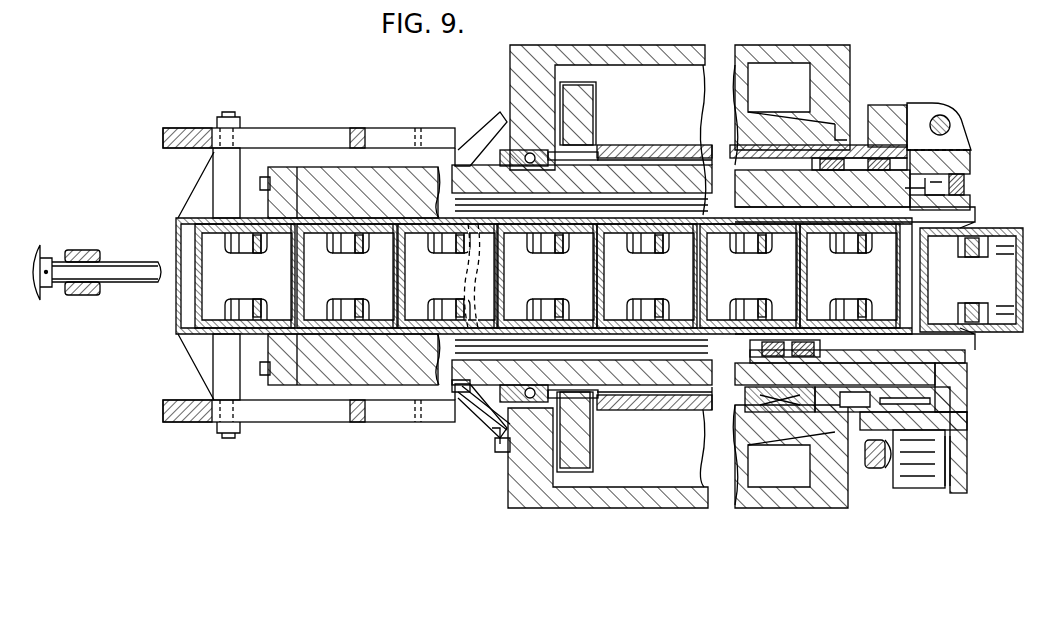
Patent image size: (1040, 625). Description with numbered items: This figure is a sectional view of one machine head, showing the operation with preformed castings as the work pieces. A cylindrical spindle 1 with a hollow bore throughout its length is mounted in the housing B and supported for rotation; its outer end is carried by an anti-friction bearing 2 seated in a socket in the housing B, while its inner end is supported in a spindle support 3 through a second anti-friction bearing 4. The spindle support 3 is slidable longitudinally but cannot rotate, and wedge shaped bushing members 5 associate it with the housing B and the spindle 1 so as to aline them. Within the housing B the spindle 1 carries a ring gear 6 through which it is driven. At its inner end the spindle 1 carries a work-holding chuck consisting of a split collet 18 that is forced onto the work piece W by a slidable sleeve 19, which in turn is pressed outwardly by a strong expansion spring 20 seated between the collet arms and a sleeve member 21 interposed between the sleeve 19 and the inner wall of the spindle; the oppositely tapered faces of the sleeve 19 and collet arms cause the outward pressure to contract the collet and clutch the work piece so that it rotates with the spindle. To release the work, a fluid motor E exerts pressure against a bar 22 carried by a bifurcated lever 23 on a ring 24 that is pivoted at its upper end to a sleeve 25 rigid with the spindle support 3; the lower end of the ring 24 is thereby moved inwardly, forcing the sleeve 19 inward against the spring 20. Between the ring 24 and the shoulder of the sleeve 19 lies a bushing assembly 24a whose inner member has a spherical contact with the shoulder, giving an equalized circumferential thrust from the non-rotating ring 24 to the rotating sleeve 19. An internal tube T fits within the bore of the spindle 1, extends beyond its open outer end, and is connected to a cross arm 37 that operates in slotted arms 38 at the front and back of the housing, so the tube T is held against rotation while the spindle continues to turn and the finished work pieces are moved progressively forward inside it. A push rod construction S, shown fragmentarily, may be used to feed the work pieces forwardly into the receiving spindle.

The cylindrical spindle 1 is at (608, 184).
The anti-friction bearing 2 is at (498, 432).
The spindle support 3 is at (688, 406).
The anti-friction bearing 4 is at (818, 412).
The wedge shaped bushing members 5 is at (633, 402).
The ring gear 6 is at (594, 110).
The split collet 18 is at (966, 216).
The slidable sleeve 19 is at (970, 197).
The expansion spring 20 is at (813, 208).
The sleeve member 21 is at (956, 147).
The bar 22 is at (877, 470).
The bifurcated lever 23 is at (882, 466).
The ring 24 is at (962, 158).
The bushing assembly 24a is at (964, 178).
The sleeve 25 is at (880, 105).
The cross arm 37 is at (222, 188).
The slotted arms 38 is at (285, 130).
The housing B is at (633, 508).
The fluid motor E is at (925, 462).
The push rod construction S is at (57, 262).
The internal tube T is at (180, 333).
The end wheel W is at (997, 334).